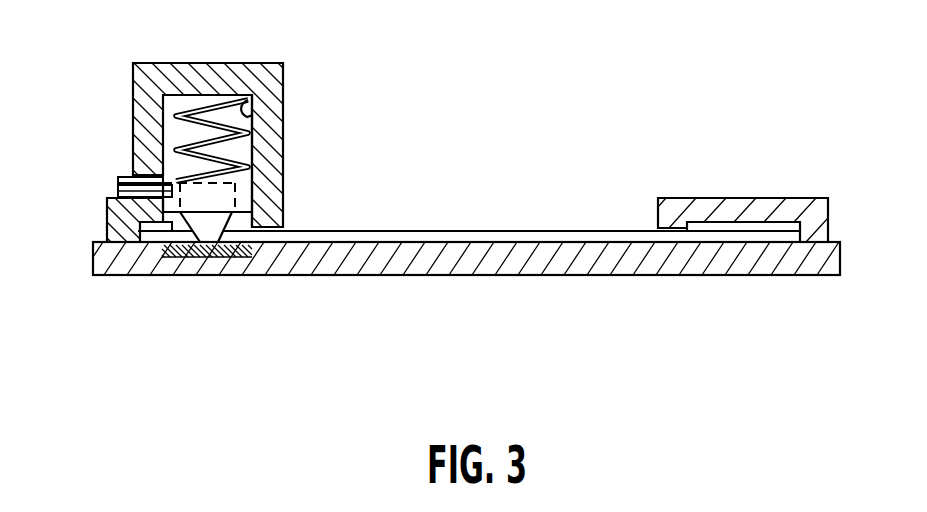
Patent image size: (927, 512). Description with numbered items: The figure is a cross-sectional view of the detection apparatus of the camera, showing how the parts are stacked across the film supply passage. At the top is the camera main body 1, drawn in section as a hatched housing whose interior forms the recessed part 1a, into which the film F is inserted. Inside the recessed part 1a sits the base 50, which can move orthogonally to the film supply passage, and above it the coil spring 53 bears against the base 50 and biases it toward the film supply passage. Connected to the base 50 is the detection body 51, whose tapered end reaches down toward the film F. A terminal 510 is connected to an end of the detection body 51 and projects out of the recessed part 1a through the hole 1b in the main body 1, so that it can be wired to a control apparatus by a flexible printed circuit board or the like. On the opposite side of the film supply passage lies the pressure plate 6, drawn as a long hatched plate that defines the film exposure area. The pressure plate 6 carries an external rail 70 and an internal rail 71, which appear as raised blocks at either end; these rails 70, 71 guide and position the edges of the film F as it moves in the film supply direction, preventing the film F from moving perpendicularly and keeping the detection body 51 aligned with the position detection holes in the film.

The camera main body 1 is at (273, 87).
The recessed part 1a is at (266, 115).
The hole 1b is at (130, 175).
The coil spring 53 is at (192, 102).
The terminal 510 is at (130, 186).
The base 50 is at (242, 192).
The detection body 51 is at (205, 231).
The external rail 70 is at (110, 230).
The internal rail 71 is at (280, 225).
The film F is at (548, 232).
The pressure plate 6 is at (415, 263).